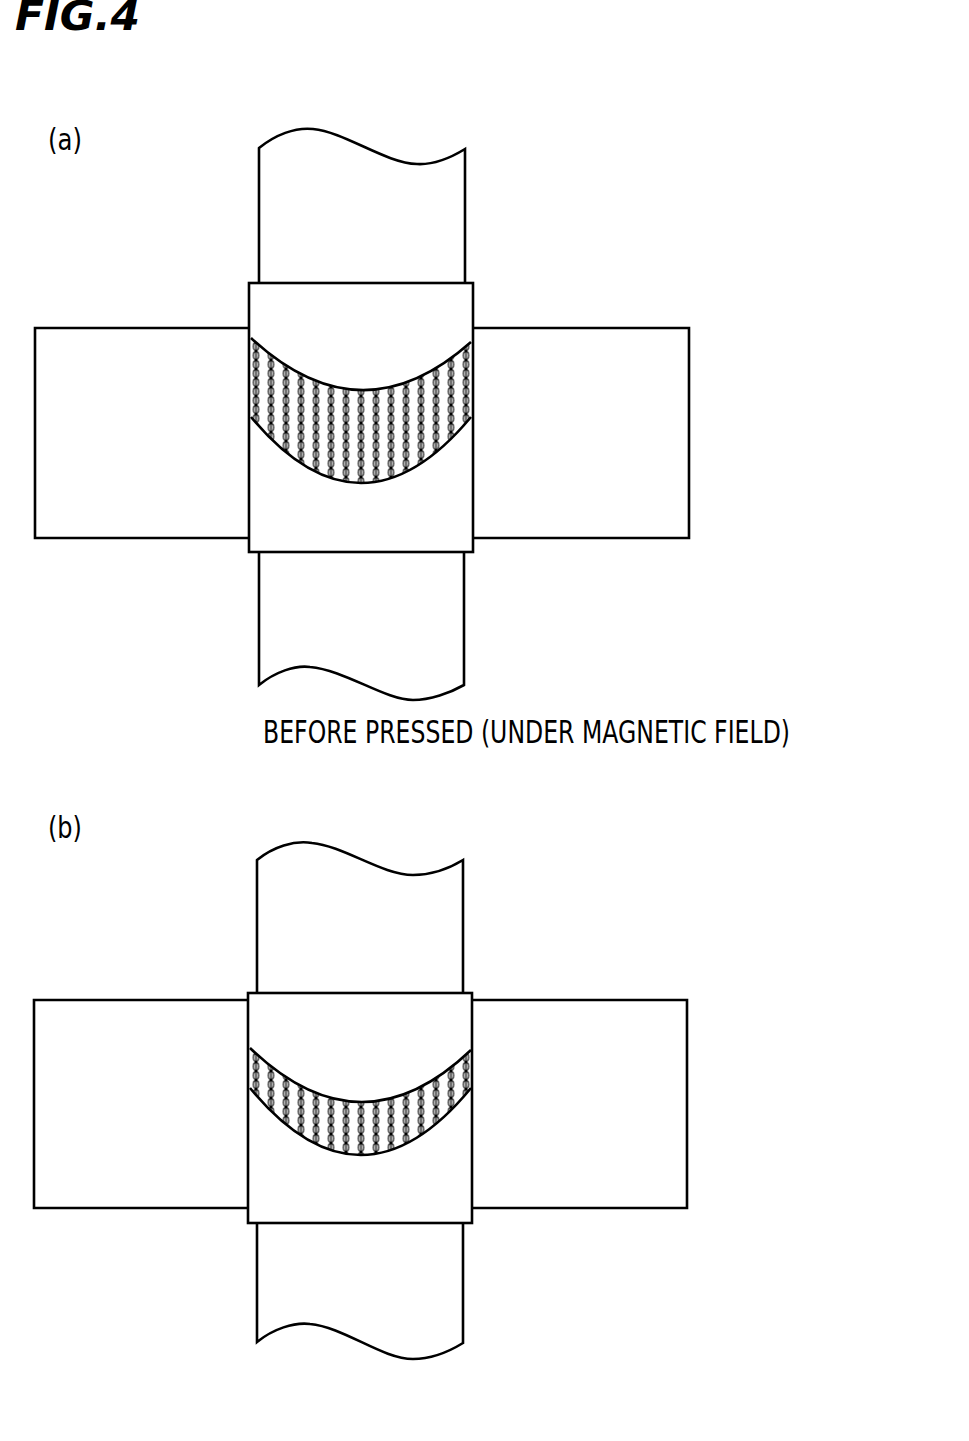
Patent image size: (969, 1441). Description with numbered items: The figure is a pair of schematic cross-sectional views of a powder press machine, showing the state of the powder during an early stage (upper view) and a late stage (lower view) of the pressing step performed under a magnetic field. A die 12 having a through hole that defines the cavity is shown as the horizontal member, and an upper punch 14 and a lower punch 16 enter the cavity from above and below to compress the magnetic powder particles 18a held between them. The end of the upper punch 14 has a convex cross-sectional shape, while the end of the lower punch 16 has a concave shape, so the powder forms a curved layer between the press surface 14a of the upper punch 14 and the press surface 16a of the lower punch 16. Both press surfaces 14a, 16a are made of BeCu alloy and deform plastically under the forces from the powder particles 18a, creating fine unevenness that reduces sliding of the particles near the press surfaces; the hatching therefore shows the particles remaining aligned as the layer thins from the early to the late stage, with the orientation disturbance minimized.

The die 12 is at (596, 540).
The upper punch 14 is at (466, 208).
The press surface of the upper punch 14a is at (263, 352).
The lower punch 16 is at (466, 616).
The press surface of the lower punch 16a is at (292, 463).
The magnetic powder particles 18a is at (470, 347).